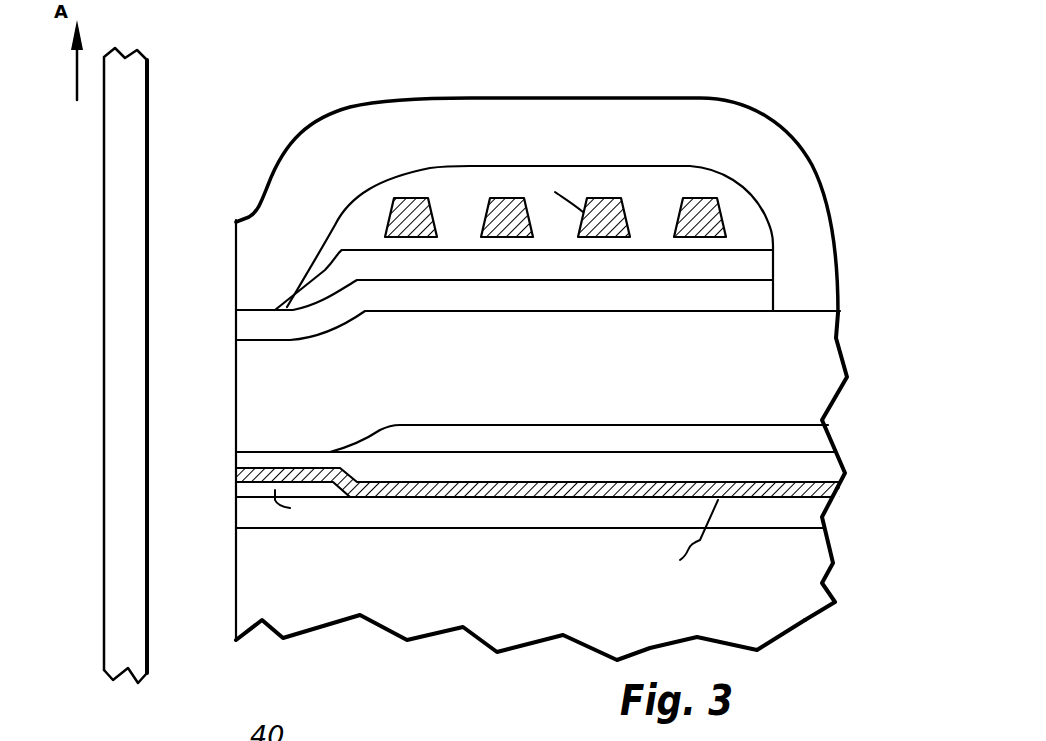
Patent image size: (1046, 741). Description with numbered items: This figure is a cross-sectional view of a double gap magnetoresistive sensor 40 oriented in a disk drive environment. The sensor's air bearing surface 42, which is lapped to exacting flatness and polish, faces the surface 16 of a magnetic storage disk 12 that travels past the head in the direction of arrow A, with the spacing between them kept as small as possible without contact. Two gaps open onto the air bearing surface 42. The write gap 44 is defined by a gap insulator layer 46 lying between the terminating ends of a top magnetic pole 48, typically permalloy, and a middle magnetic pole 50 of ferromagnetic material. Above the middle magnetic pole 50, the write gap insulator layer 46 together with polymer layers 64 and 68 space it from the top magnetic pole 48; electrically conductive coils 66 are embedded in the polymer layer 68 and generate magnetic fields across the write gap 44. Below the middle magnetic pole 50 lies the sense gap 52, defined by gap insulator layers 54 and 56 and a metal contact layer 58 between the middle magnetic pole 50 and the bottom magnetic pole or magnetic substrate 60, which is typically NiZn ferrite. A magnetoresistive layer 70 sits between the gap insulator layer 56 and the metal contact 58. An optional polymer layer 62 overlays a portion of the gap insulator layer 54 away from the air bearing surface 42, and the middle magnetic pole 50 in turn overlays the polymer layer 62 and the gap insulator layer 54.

The magnetic storage disk 12 is at (100, 180).
The surface of magnetic storage disk 16 is at (150, 76).
The double gap magnetoresistive sensor 40 is at (798, 98).
The air bearing surface 42 is at (234, 239).
The write gap 44 is at (235, 317).
The gap insulator layer 46 is at (250, 327).
The top magnetic pole 48 is at (357, 121).
The middle magnetic pole 50 is at (243, 391).
The sense gap 52 is at (252, 488).
The gap insulator layer 54 is at (235, 458).
The gap insulator layer 56 is at (232, 522).
The metal contact layer 58 is at (235, 475).
The bottom magnetic pole or magnetic substrate 60 is at (247, 574).
The polymer layer 62 is at (402, 428).
The polymer layer 64 is at (323, 278).
The electrically conductive coils 66 is at (487, 198).
The polymer layer 68 is at (365, 212).
The magnetoresistive layer 70 is at (240, 500).